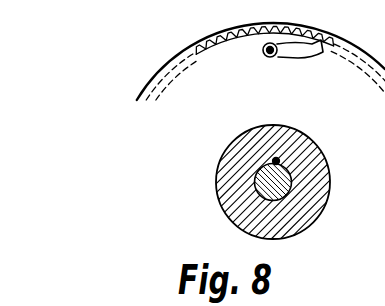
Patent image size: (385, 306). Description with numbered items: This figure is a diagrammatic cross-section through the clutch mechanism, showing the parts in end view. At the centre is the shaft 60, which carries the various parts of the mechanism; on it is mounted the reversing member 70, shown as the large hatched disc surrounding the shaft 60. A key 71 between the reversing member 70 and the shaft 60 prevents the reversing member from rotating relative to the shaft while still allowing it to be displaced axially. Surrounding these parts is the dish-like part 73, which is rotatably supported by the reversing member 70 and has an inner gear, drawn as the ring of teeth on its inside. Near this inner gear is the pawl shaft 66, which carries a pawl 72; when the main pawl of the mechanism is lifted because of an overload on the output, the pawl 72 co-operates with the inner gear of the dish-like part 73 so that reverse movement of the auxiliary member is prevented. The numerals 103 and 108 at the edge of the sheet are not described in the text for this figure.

The shaft 60 is at (258, 191).
The pawl shaft 66 is at (265, 57).
The reversing member 70 is at (233, 173).
The key 71 is at (281, 160).
The pawl 72 is at (308, 59).
The dish-like part 73 is at (311, 27).
The reference numeral 103 is at (371, 253).
The reference numeral 108 is at (371, 295).